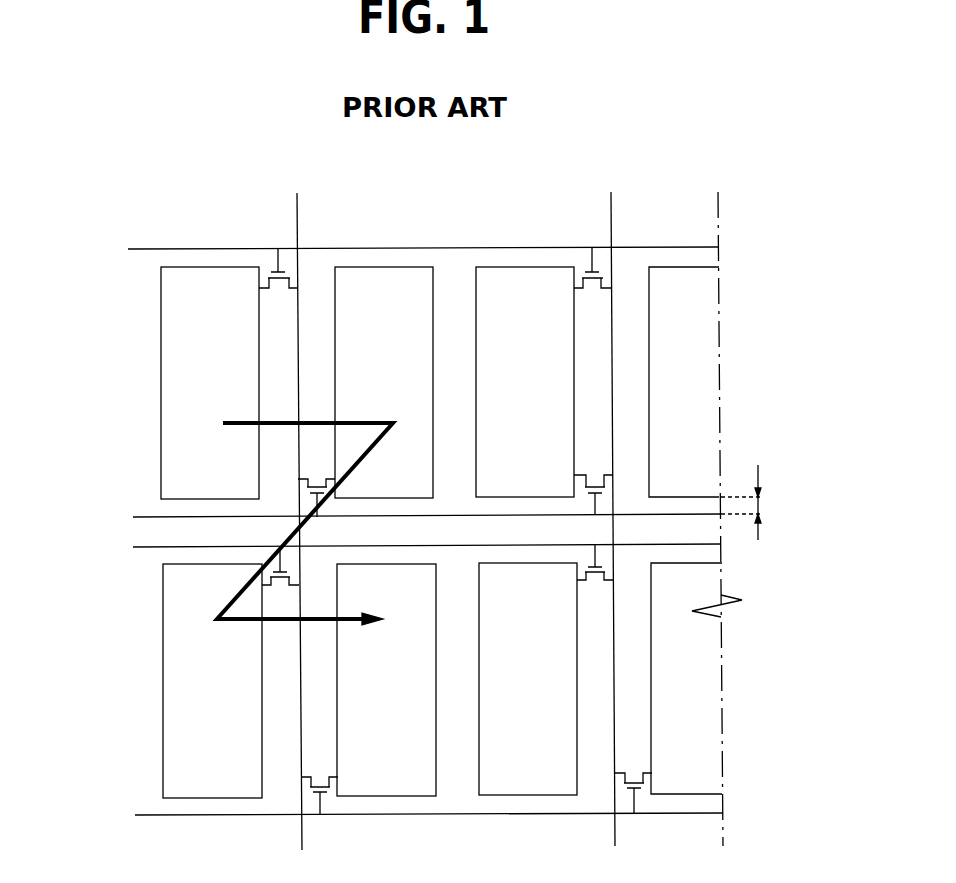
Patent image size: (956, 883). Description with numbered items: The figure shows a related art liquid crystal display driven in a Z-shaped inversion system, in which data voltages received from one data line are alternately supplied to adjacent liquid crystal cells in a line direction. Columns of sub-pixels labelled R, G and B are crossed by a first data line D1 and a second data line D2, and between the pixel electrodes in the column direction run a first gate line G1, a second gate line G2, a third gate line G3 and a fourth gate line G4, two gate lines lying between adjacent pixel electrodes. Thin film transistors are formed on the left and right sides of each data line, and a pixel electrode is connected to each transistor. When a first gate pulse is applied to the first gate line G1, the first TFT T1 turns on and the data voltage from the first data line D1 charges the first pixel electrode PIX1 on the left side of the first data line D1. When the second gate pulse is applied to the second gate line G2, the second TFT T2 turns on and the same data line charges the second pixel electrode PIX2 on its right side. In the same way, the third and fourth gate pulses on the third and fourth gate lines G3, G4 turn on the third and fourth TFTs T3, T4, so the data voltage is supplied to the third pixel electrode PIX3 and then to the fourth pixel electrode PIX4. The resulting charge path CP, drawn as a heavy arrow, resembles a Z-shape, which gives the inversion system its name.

The red sub-pixel column R is at (221, 224).
The green sub-pixel column G is at (392, 224).
The blue sub-pixel column B is at (530, 224).
The first data line D1 is at (297, 506).
The second data line D2 is at (611, 504).
The first gate line G1 is at (410, 250).
The second gate line G2 is at (413, 518).
The third gate line G3 is at (413, 548).
The fourth gate line G4 is at (415, 816).
The first pixel electrode PIX1 is at (233, 369).
The second pixel electrode PIX2 is at (406, 369).
The third pixel electrode PIX3 is at (236, 671).
The fourth pixel electrode PIX4 is at (409, 671).
The first TFT T1 is at (278, 281).
The second TFT T2 is at (316, 483).
The third TFT T3 is at (280, 580).
The fourth TFT T4 is at (319, 781).
The charging path (data charging sequence) CP is at (366, 453).